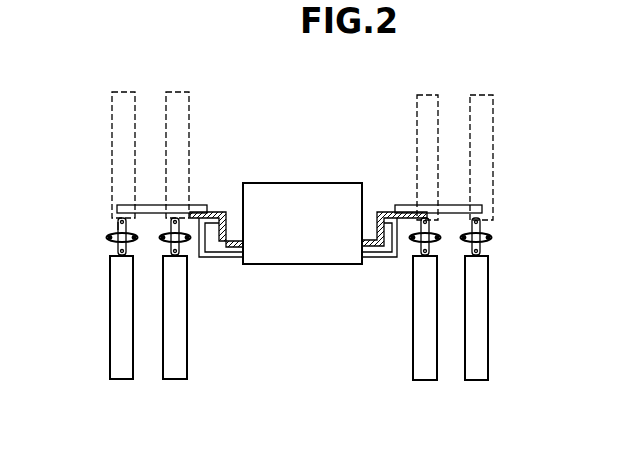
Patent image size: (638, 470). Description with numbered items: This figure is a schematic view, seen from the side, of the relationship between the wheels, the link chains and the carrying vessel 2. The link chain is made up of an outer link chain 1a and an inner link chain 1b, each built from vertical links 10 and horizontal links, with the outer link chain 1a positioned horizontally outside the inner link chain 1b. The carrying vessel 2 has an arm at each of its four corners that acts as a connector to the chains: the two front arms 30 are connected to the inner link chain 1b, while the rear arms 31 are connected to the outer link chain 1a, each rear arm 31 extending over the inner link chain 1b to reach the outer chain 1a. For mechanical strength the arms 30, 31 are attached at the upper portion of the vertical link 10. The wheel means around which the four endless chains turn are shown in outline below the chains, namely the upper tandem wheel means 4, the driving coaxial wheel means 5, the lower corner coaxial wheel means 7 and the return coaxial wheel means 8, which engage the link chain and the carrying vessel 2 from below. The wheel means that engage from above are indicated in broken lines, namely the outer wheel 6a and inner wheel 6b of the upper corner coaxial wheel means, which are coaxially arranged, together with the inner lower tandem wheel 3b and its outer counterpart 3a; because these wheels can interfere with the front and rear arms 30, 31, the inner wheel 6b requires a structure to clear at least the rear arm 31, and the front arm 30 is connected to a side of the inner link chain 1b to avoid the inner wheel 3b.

The outer link chain 1a is at (108, 240).
The inner link chain 1b is at (198, 252).
The carrying vessel 2 is at (312, 230).
The lead terminal 3a is at (128, 92).
The inner lower tandem wheel 3b is at (182, 92).
The upper tandem wheel means 4 is at (341, 346).
The driving coaxial wheel means 5 is at (341, 346).
The outer wheel 6a is at (334, 122).
The inner wheel 6b is at (361, 133).
The lower corner coaxial wheel means 7 is at (341, 346).
The return coaxial wheel means 8 is at (153, 392).
The vertical link 10 is at (118, 226).
The front arm 30 is at (190, 212).
The rear arm 31 is at (118, 208).